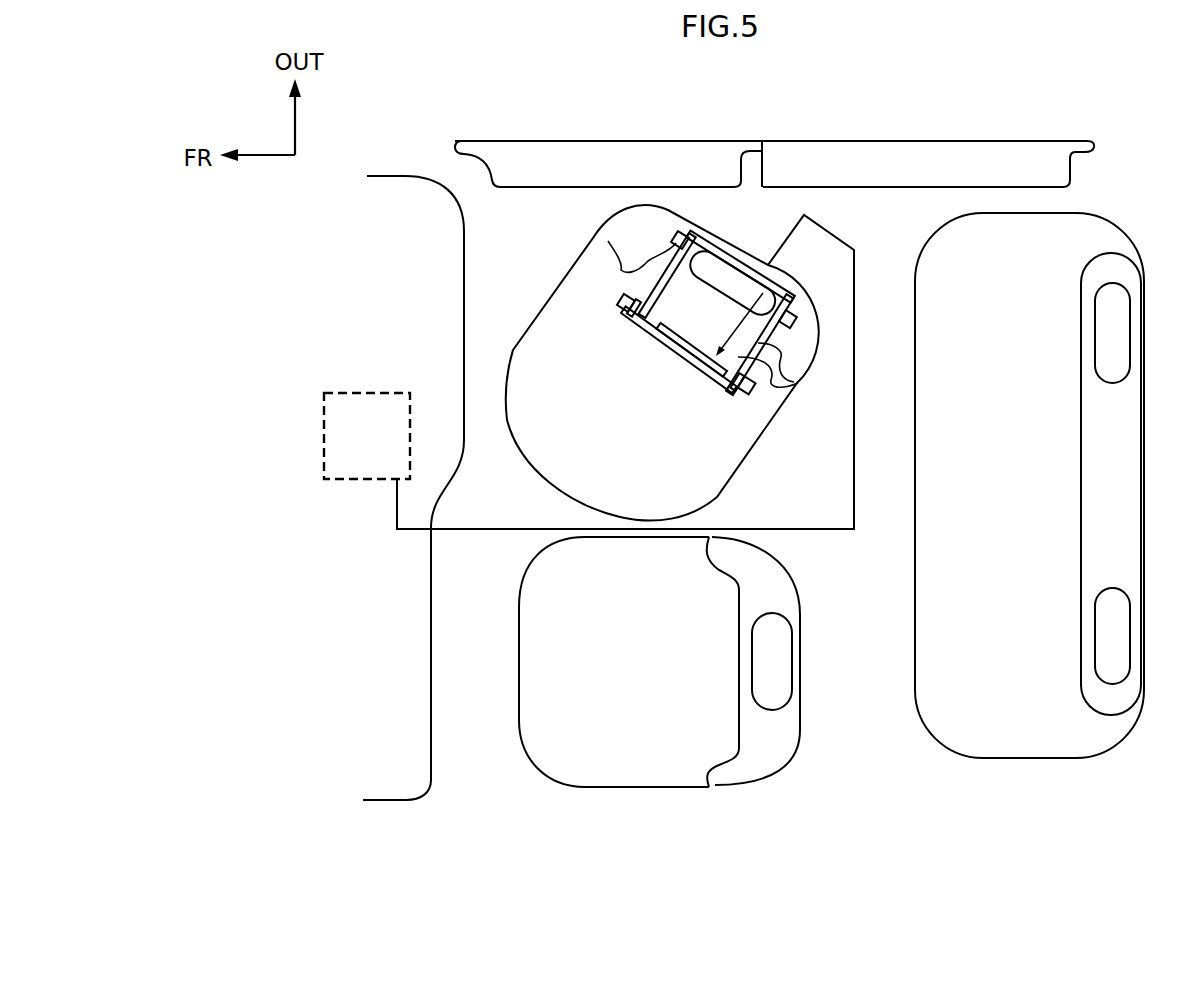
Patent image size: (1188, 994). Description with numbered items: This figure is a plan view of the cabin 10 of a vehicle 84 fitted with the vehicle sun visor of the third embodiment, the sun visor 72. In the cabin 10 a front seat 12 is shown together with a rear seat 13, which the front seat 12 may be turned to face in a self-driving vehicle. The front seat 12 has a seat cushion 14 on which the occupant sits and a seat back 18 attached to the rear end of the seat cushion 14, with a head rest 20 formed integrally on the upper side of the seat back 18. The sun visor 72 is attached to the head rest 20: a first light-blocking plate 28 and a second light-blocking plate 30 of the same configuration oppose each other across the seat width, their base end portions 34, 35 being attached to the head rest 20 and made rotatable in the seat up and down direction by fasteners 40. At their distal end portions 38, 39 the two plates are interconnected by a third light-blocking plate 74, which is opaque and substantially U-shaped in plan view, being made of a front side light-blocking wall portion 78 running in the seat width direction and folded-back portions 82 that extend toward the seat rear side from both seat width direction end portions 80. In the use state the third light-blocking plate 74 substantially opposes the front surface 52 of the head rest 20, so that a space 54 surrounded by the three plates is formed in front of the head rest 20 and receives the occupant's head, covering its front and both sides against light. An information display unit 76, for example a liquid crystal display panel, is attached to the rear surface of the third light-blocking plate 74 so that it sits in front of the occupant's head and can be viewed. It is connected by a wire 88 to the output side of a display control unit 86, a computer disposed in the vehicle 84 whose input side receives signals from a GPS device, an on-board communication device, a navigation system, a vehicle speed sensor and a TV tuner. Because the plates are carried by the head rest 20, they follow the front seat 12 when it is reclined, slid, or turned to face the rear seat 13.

The cabin 10 is at (481, 326).
The front seat 12 is at (521, 289).
The rear seat 13 is at (980, 460).
The seat cushion 14 is at (663, 479).
The seat back 18 is at (611, 212).
The head rest 20 is at (730, 264).
The first light-blocking plate 28 is at (760, 322).
The second light-blocking plate 30 is at (652, 242).
The base end portion 34 is at (775, 276).
The base end portion 35 is at (700, 242).
The distal end portion 38 is at (786, 374).
The distal end portion 39 is at (611, 283).
The fastener 40 is at (661, 226).
The front surface 52 is at (712, 290).
The space 54 is at (681, 324).
The sun visor 72 is at (603, 320).
The third light-blocking plate 74 is at (651, 330).
The information display unit 76 is at (633, 323).
The front side light-blocking wall portion 78 is at (684, 354).
The seat width direction end portions 80 is at (610, 300).
The folded-back portions 82 is at (608, 290).
The vehicle 84 is at (459, 120).
The display control unit 86 is at (365, 385).
The wire 88 is at (850, 435).